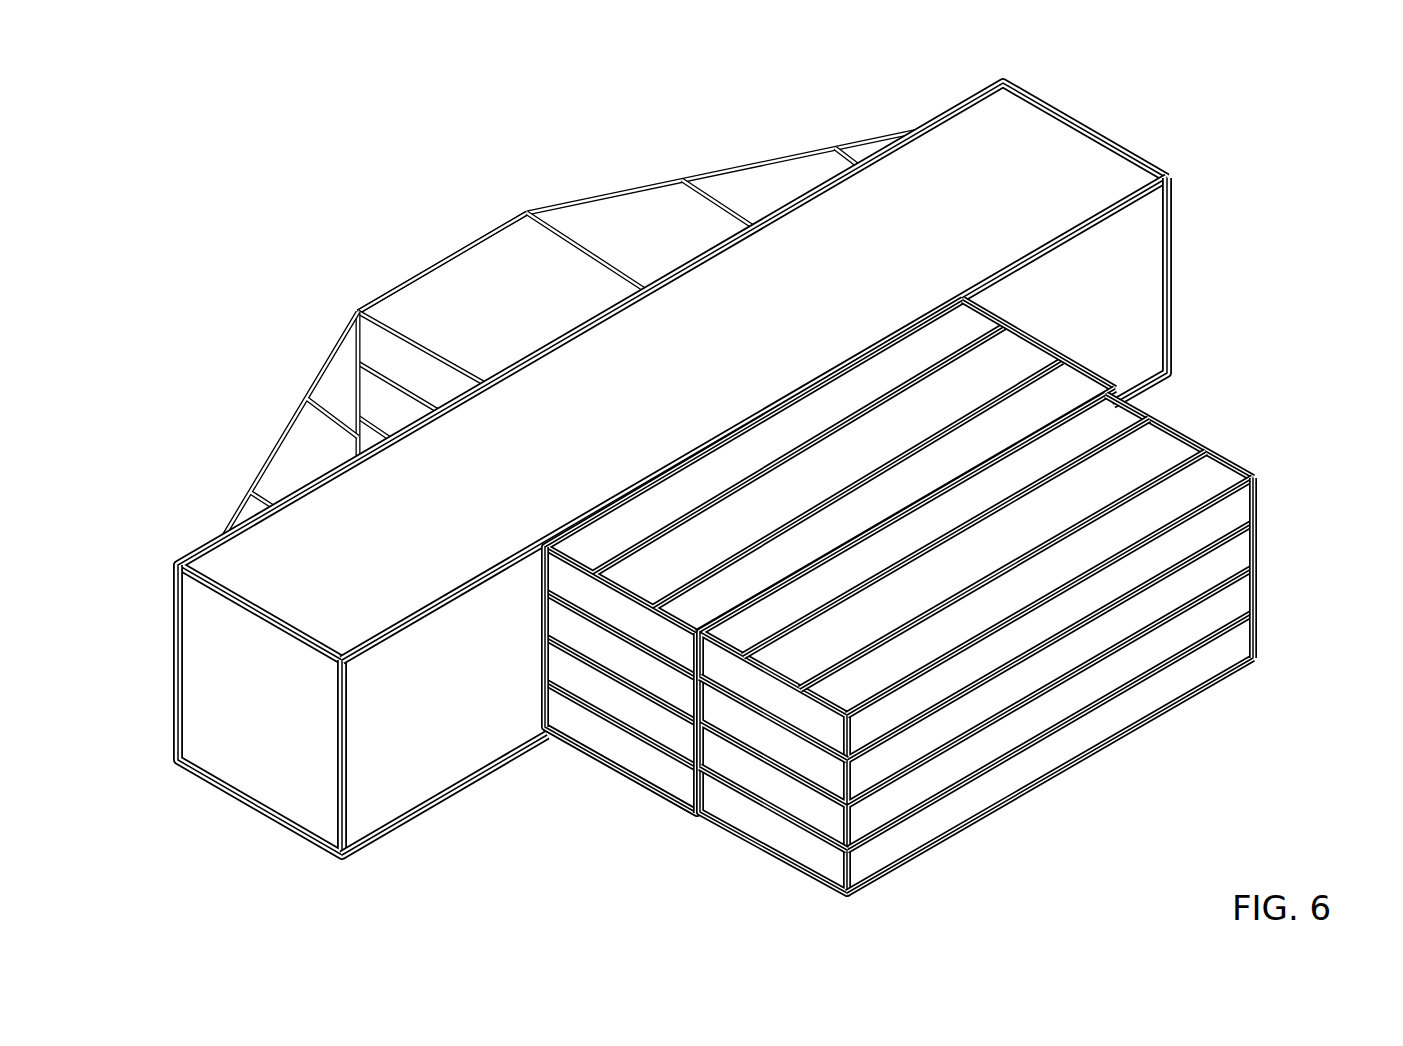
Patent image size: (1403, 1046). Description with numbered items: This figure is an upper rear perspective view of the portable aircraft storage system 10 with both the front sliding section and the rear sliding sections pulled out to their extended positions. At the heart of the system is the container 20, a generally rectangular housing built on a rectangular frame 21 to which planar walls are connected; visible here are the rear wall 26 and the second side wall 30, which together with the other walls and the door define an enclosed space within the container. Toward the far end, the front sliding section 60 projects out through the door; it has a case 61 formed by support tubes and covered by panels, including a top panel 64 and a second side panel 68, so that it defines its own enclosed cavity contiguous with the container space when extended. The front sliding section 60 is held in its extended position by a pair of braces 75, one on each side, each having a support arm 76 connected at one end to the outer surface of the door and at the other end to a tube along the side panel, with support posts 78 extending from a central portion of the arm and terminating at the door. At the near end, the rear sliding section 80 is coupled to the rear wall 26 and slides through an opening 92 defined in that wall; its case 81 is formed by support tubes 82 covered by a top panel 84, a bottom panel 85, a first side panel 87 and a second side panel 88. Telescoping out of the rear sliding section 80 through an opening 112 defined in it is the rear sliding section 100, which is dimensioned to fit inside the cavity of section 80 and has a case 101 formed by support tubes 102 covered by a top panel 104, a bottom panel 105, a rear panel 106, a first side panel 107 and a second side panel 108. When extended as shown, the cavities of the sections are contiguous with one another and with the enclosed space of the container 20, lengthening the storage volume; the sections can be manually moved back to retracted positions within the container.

The portable aircraft storage system 10 is at (238, 188).
The container 20 is at (1105, 130).
The frame 21 is at (1172, 185).
The rear wall 26 is at (377, 795).
The second side wall 30 is at (250, 752).
The front sliding section 60 is at (425, 258).
The case 61 is at (497, 223).
The top panel 64 is at (432, 318).
The second side panel 68 is at (377, 393).
The brace 75 is at (285, 437).
The support arm 76 is at (572, 203).
The support post 78 is at (718, 200).
The rear sliding section 80 is at (638, 787).
The case 81 is at (1145, 393).
The support tube 82 is at (1040, 393).
The top panel 84 is at (1003, 365).
The bottom panel 85 is at (607, 765).
The first side panel 87 is at (593, 722).
The second side panel 88 is at (997, 318).
The opening 92 is at (547, 617).
The rear sliding section 100 is at (797, 873).
The case 101 is at (1254, 496).
The support tube 102 is at (1148, 490).
The top panel 104 is at (1157, 455).
The bottom panel 105 is at (965, 828).
The rear panel 106 is at (1039, 757).
The first side panel 107 is at (778, 787).
The second side panel 108 is at (1257, 578).
The opening 112 is at (695, 785).